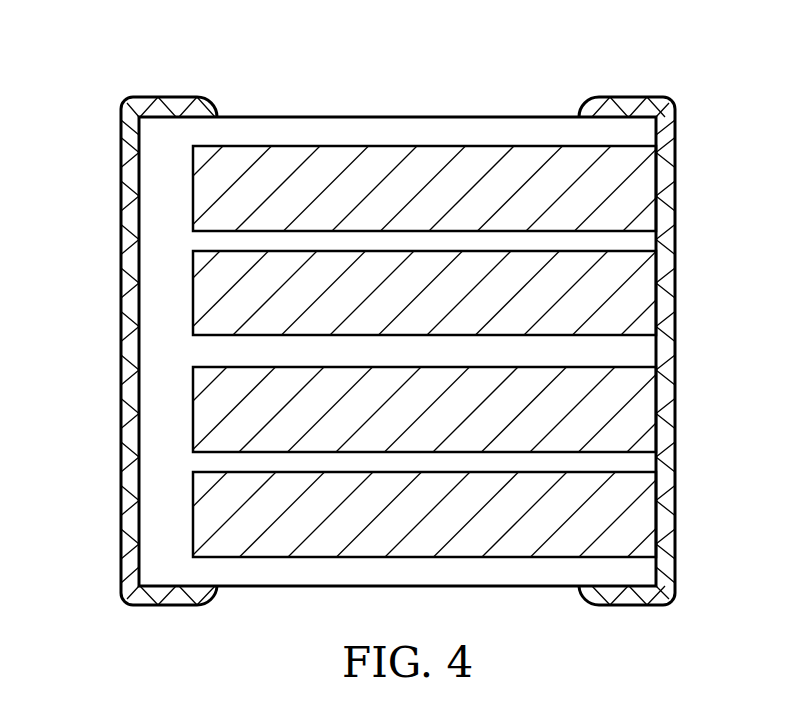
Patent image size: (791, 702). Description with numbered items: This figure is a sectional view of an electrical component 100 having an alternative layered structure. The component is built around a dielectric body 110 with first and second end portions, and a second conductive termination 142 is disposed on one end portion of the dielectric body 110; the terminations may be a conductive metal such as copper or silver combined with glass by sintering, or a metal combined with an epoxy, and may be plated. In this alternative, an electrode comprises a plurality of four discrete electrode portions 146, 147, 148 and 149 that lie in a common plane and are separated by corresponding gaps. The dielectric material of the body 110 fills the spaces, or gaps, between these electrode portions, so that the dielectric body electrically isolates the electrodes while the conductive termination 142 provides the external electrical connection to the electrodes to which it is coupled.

The electrical component 100 is at (131, 51).
The dielectric body 110 is at (400, 127).
The second conductive termination 142 is at (675, 130).
The electrode portion 146 is at (635, 188).
The electrode portion 147 is at (634, 291).
The electrode portion 148 is at (634, 412).
The electrode portion 149 is at (634, 516).